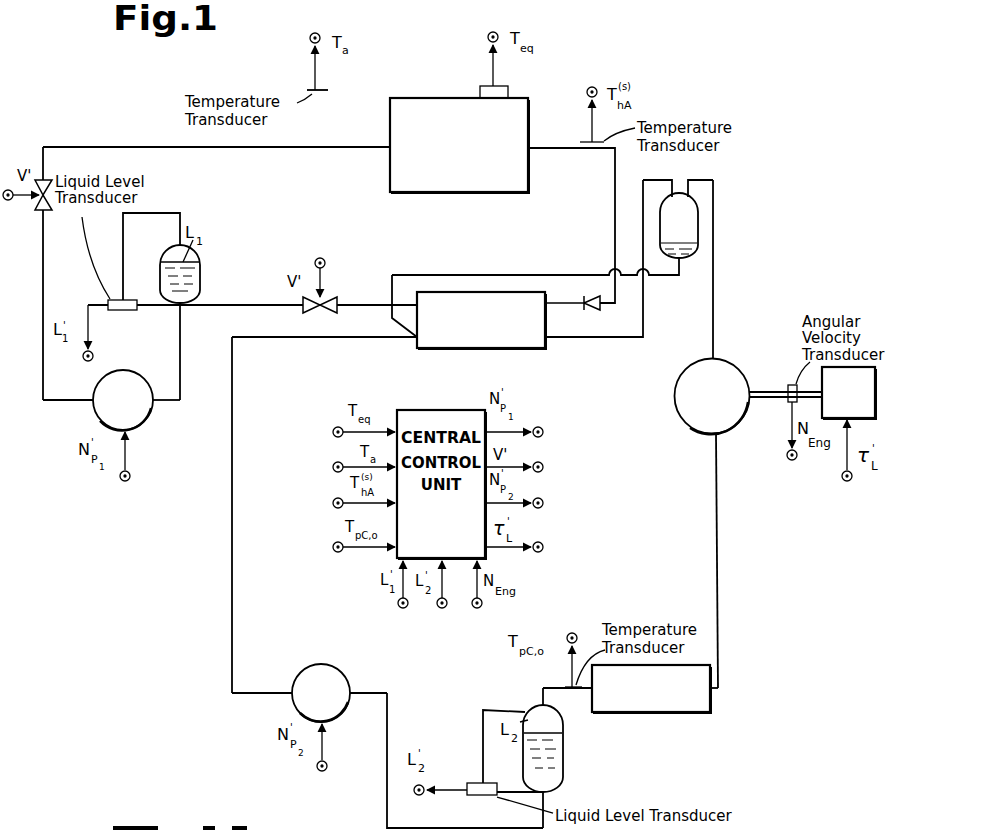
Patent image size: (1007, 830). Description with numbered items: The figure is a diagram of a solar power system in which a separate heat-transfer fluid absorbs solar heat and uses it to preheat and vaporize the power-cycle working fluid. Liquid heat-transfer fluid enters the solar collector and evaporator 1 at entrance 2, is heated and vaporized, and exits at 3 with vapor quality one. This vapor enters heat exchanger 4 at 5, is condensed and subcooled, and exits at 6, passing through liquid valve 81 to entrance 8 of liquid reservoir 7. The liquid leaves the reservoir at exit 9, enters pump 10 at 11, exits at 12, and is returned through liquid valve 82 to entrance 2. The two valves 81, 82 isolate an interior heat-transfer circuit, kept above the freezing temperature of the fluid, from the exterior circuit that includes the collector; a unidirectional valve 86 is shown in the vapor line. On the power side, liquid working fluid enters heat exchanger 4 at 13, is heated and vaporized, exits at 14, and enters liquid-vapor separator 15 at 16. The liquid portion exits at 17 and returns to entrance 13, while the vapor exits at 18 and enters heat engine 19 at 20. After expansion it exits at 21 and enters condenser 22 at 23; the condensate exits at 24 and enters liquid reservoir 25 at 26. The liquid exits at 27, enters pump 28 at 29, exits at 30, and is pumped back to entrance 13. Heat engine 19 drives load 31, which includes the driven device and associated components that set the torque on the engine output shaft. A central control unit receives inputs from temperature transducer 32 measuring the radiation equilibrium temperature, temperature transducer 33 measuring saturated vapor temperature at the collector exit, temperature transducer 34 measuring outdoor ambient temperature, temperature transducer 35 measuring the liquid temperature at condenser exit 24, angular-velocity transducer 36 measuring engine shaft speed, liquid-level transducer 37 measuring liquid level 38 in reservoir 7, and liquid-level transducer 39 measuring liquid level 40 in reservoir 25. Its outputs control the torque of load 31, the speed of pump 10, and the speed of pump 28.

The solar collector and evaporator 1 is at (430, 98).
The entrance of collector and evaporator 2 is at (390, 146).
The exit of collector and evaporator 3 is at (529, 146).
The heat exchanger 4 is at (477, 348).
The heat-exchanger entrance 5 is at (555, 303).
The heat-exchanger exit 6 is at (417, 303).
The liquid reservoir 7 is at (190, 277).
The entrance of liquid reservoir 8 is at (187, 303).
The exit of liquid reservoir 9 is at (183, 308).
The pump 10 is at (143, 380).
The pump entrance 11 is at (152, 402).
The pump exit 12 is at (95, 402).
The heat-exchanger working-fluid entrance 13 is at (415, 338).
The heat-exchanger working-fluid exit 14 is at (548, 340).
The liquid-vapor separator 15 is at (698, 228).
The separator entrance 16 is at (662, 197).
The separator liquid exit 17 is at (680, 259).
The separator vapor exit 18 is at (700, 197).
The heat engine 19 is at (680, 380).
The heat-engine entrance 20 is at (715, 357).
The heat-engine exit 21 is at (714, 434).
The condenser 22 is at (680, 713).
The condenser entrance 23 is at (712, 695).
The condenser exit 24 is at (590, 693).
The liquid reservoir 25 is at (561, 762).
The entrance of liquid reservoir 26 is at (540, 708).
The exit of liquid reservoir 27 is at (555, 790).
The pump 28 is at (333, 672).
The pump entrance 29 is at (352, 690).
The pump exit 30 is at (290, 690).
The load 31 is at (875, 378).
The temperature transducer 32 is at (485, 89).
The temperature transducer 33 is at (588, 134).
The temperature transducer 34 is at (311, 88).
The temperature transducer 35 is at (565, 687).
The angular-velocity transducer 36 is at (790, 385).
The liquid-level transducer 37 is at (136, 310).
The liquid level 38 is at (173, 262).
The liquid-level transducer 39 is at (477, 796).
The liquid level 40 is at (548, 733).
The liquid valve 81 is at (331, 300).
The liquid valve 82 is at (39, 212).
The unidirectional valve 86 is at (600, 310).